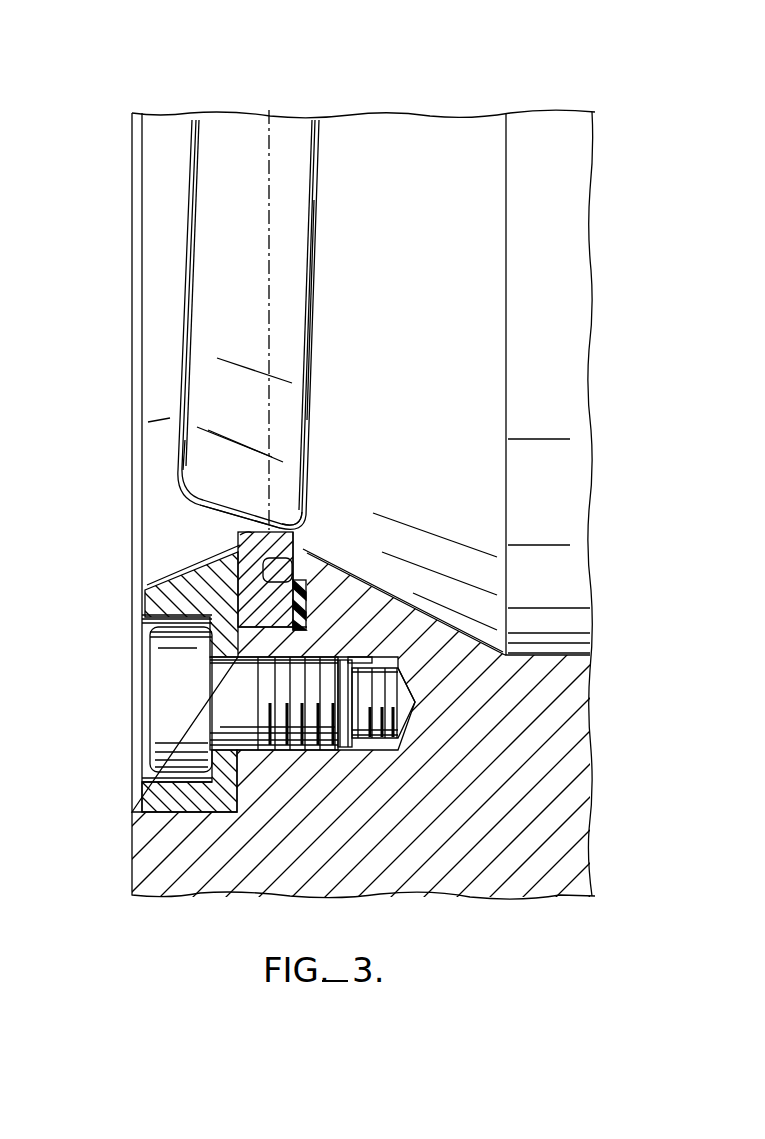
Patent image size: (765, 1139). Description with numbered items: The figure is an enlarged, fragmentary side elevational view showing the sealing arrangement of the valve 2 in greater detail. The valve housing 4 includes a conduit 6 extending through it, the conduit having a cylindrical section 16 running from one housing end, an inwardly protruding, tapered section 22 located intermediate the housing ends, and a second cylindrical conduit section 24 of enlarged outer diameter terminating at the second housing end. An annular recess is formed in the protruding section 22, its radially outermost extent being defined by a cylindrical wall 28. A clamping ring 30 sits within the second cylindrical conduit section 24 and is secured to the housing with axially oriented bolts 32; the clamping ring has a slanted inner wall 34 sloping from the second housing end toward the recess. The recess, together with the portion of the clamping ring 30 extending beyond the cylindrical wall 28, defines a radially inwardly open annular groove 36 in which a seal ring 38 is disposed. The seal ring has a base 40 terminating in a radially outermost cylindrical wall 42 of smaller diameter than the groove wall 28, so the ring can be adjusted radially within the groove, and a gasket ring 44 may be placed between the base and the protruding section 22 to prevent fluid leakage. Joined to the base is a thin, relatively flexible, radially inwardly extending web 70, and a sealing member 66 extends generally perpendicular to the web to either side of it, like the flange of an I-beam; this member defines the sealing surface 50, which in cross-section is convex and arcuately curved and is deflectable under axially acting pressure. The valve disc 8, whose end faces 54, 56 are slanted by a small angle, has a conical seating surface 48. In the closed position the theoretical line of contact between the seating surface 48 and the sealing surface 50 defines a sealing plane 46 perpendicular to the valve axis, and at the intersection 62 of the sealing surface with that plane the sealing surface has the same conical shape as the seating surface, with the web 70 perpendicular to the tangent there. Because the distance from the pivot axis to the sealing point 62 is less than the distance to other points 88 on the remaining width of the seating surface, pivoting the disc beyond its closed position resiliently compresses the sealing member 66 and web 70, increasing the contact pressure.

The valve 2 is at (481, 64).
The valve housing 4 is at (585, 822).
The conduit 6 is at (580, 346).
The valve disc 8 is at (326, 135).
The cylindrical section 16 is at (575, 240).
The inwardly protruding, tapered section 22 is at (490, 492).
The second cylindrical conduit section 24 is at (160, 806).
The cylindrical wall 28 is at (277, 632).
The clamping ring 30 is at (160, 600).
The axially oriented bolts 32 is at (165, 728).
The slanted inner wall 34 is at (160, 560).
The annular groove 36 is at (292, 570).
The seal ring 38 is at (298, 545).
The base 40 is at (307, 595).
The cylindrical wall 42 is at (253, 653).
The gasket ring 44 is at (355, 590).
The sealing plane 46 is at (272, 113).
The seating surface 48 is at (190, 441).
The sealing surface 50 is at (242, 530).
The disc end face 54 is at (183, 282).
The disc end face 56 is at (313, 290).
The intersection 62 is at (271, 530).
The sealing member 66 is at (240, 533).
The web 70 is at (238, 545).
The points on remaining width of seating surface 88 is at (253, 520).